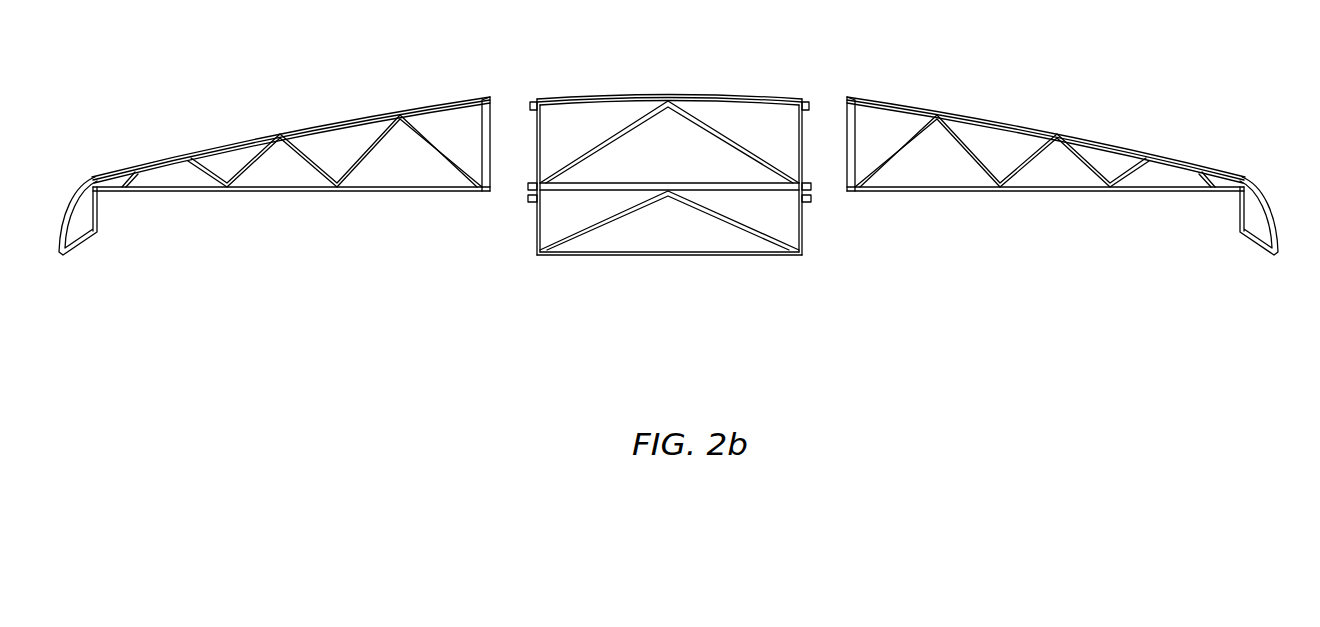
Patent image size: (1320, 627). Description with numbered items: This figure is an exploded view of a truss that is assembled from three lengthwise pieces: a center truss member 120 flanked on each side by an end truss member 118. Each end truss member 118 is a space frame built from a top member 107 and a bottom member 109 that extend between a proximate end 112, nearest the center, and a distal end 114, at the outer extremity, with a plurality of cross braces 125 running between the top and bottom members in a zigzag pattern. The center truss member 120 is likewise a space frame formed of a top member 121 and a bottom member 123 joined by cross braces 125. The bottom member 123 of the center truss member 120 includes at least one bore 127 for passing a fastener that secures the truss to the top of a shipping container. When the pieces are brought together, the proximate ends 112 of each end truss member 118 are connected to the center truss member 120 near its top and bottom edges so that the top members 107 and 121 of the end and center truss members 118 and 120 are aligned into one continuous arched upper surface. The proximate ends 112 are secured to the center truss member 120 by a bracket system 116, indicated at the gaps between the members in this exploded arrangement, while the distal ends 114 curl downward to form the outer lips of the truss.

The top member 107 is at (280, 134).
The bottom member 109 is at (384, 191).
The proximate end 112 is at (488, 191).
The distal end 114 is at (64, 252).
The bracket system 116 is at (521, 70).
The end truss member 118 is at (277, 250).
The center truss member 120 is at (637, 264).
The top member 121 is at (714, 95).
The bottom member 123 is at (725, 256).
The cross braces 125 is at (628, 122).
The bore 127 is at (544, 256).